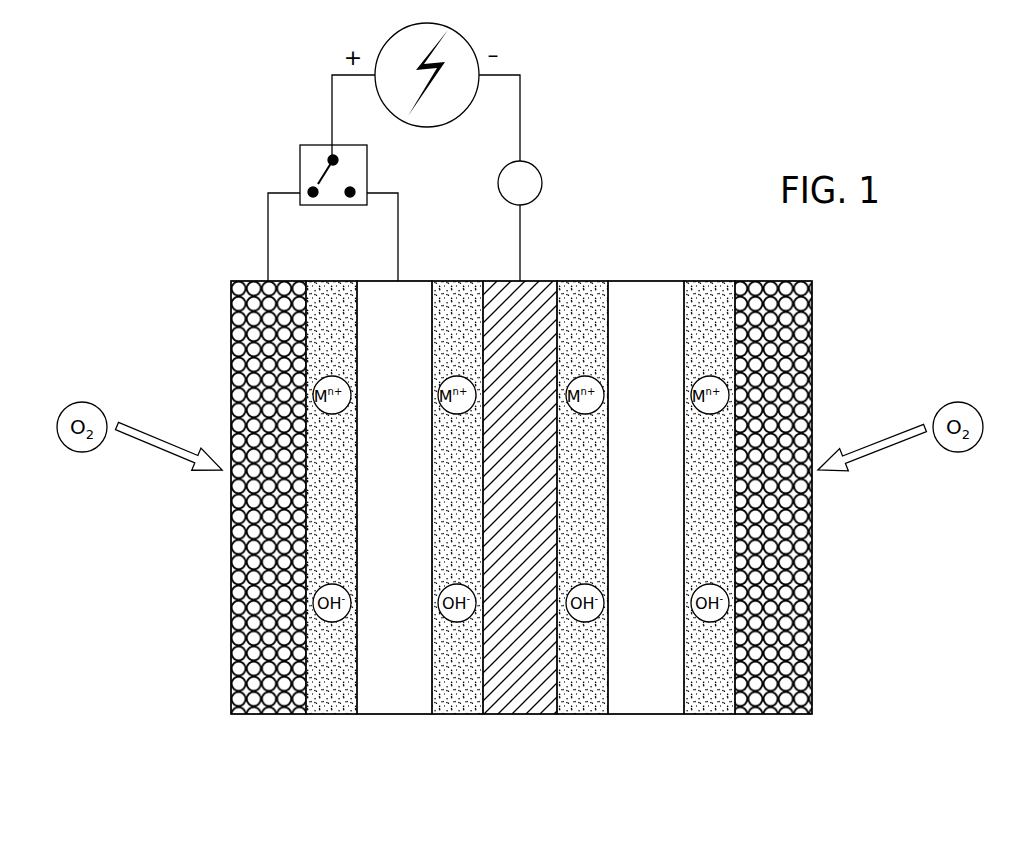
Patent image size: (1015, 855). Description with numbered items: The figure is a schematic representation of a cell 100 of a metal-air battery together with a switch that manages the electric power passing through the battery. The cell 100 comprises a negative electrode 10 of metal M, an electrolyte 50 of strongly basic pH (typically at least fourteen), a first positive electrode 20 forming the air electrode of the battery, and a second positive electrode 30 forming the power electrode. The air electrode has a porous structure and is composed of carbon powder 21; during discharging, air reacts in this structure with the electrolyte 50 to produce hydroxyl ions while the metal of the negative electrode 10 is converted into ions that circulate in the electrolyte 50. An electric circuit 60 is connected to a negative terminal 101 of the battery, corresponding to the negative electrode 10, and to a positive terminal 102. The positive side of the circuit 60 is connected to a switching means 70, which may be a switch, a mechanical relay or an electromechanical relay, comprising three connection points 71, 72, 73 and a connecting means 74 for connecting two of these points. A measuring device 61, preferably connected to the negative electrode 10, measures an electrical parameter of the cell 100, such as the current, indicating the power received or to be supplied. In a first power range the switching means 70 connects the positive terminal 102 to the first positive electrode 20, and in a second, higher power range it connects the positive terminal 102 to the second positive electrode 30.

The cell 100 is at (858, 736).
The negative electrode 10 is at (520, 703).
The first positive electrode 20 is at (262, 703).
The carbon powder 21 is at (231, 298).
The second positive electrode 30 is at (394, 700).
The electrolyte 50 is at (337, 703).
The electric circuit 60 is at (455, 121).
The measuring device 61 is at (538, 172).
The switching means 70 is at (286, 178).
The connection point 71 is at (331, 156).
The connection point 72 is at (312, 197).
The connection point 73 is at (351, 197).
The connecting means 74 is at (312, 180).
The negative terminal 101 is at (556, 236).
The positive terminal 102 is at (420, 238).